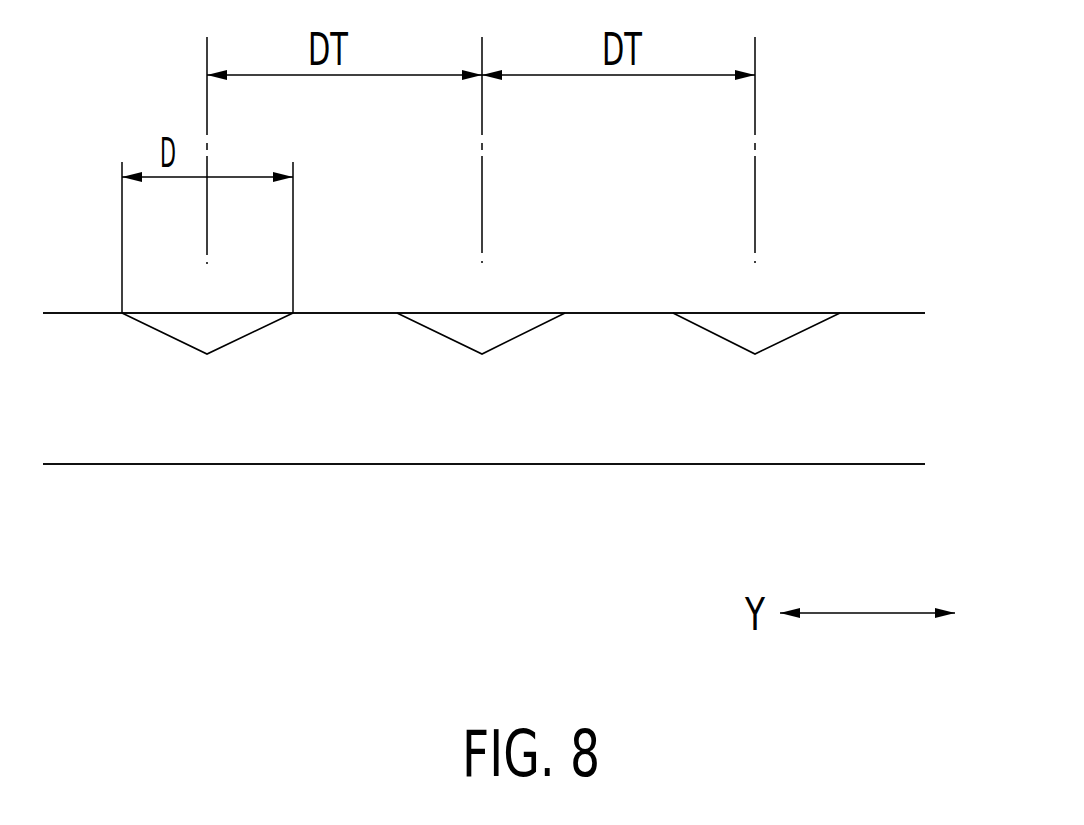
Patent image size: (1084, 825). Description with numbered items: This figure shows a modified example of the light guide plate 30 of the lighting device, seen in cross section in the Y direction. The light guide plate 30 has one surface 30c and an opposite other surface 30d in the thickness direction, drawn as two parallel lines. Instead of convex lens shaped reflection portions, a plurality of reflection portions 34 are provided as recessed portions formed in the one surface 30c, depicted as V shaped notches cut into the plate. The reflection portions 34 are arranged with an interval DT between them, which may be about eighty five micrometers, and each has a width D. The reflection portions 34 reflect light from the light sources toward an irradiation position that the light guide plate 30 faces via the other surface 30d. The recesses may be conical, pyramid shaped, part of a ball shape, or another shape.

The light guide plate 30 is at (910, 333).
The one surface 30c is at (348, 310).
The other surface 30d is at (535, 464).
The reflection portions 34 is at (233, 338).